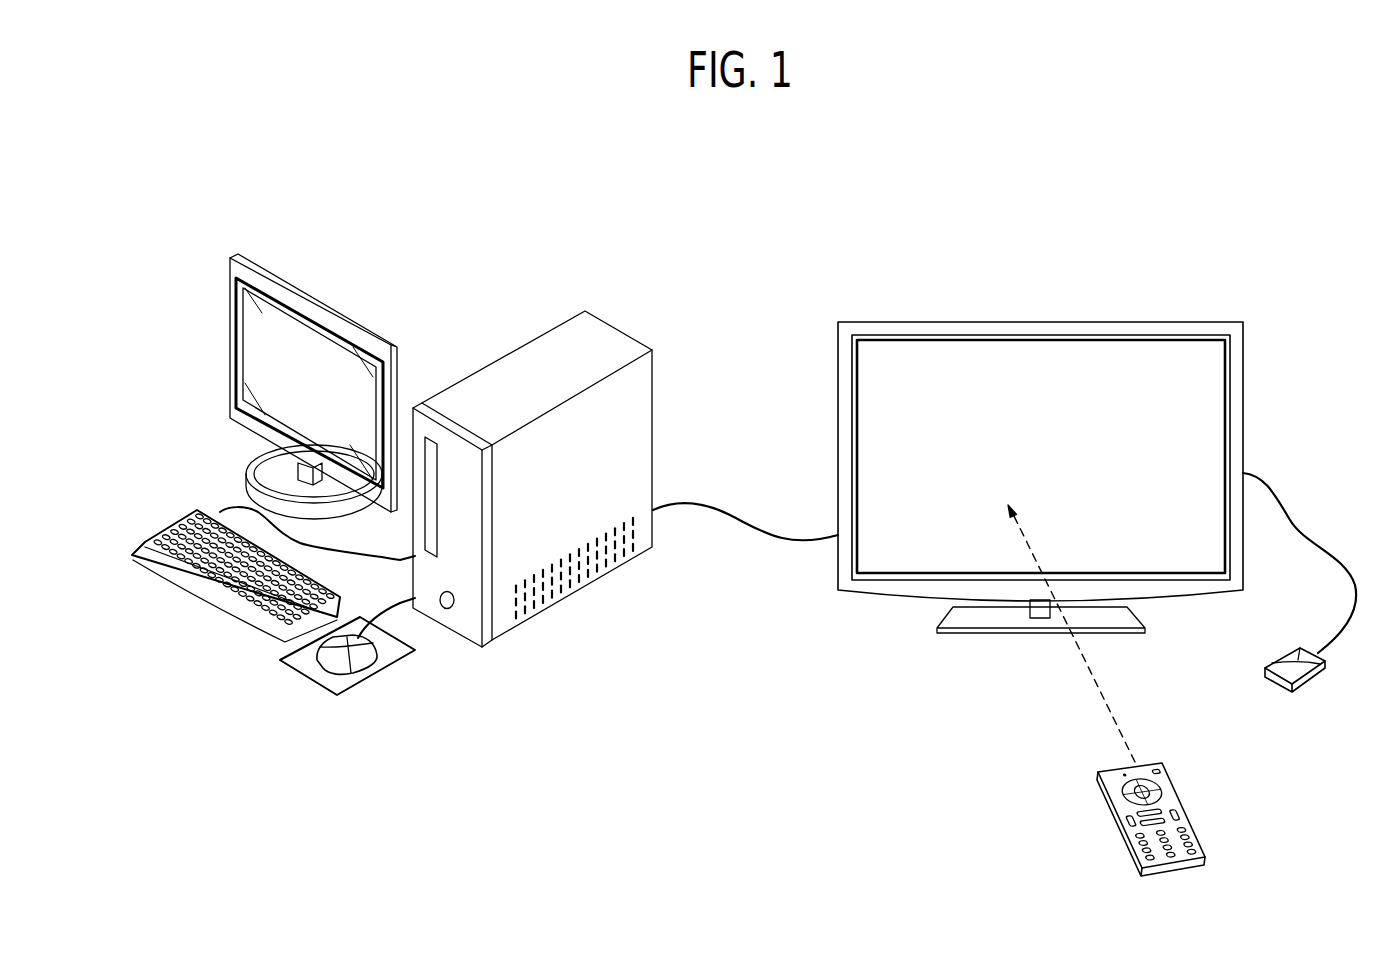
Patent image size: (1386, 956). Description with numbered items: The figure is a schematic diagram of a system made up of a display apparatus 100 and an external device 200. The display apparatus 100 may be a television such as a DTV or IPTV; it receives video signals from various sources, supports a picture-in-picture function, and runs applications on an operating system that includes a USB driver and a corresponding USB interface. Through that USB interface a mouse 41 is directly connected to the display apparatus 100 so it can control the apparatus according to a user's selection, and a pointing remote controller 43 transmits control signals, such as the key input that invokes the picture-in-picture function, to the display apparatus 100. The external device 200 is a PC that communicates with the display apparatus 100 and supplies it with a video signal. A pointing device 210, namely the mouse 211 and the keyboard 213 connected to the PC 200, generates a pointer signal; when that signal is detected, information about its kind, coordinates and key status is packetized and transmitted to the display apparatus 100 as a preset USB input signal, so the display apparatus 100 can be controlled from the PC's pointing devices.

The display apparatus 100 is at (1023, 322).
The external device 200 is at (573, 320).
The pointing device 210 is at (246, 734).
The mouse 211 is at (327, 667).
The keyboard 213 is at (208, 590).
The mouse 41 is at (1308, 677).
The remote controller 43 is at (1172, 798).